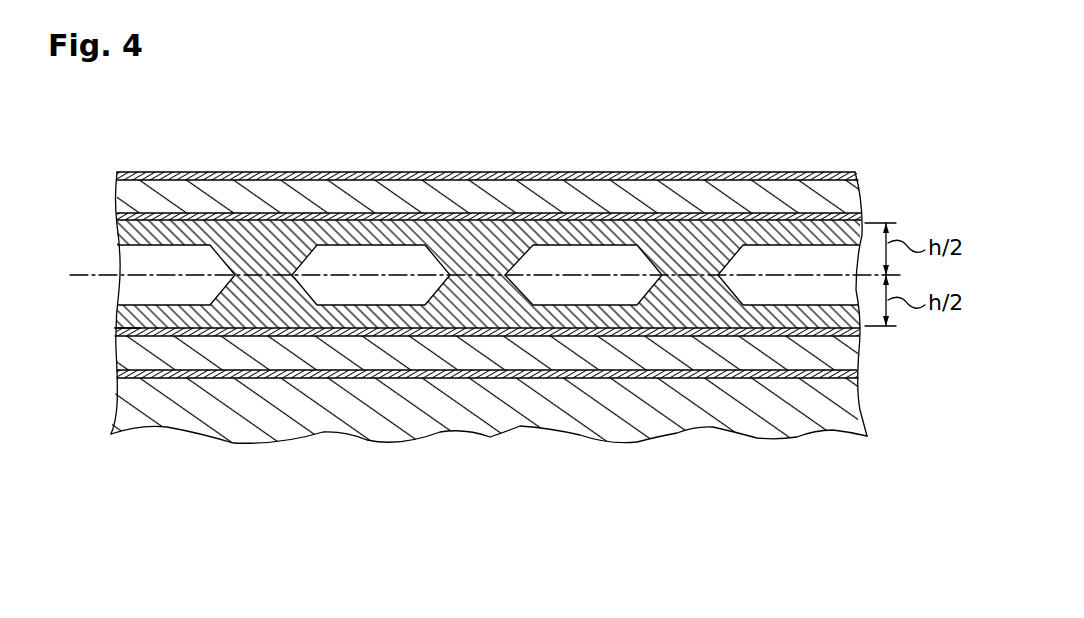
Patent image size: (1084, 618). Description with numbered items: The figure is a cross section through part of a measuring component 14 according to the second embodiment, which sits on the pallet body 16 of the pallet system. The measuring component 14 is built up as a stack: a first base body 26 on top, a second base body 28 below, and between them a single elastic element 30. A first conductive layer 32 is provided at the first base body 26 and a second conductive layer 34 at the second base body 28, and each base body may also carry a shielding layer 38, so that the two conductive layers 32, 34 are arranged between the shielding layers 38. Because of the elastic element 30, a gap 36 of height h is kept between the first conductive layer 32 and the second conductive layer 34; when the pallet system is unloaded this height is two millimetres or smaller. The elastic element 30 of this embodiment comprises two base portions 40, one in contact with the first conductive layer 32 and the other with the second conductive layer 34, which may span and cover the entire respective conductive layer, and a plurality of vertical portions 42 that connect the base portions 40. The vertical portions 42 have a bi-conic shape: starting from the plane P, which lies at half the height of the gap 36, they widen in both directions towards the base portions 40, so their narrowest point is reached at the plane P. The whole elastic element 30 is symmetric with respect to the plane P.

The measuring component 14 is at (373, 125).
The pallet body 16 is at (813, 413).
The first base body 26 is at (650, 190).
The second base body 28 is at (613, 357).
The elastic element 30 is at (487, 193).
The first conductive layer 32 is at (585, 217).
The second conductive layer 34 is at (542, 336).
The gap 36 is at (102, 323).
The shielding layer 38 is at (712, 177).
The base portions 40 is at (163, 235).
The vertical portions 42 is at (258, 267).
The plane P is at (80, 273).